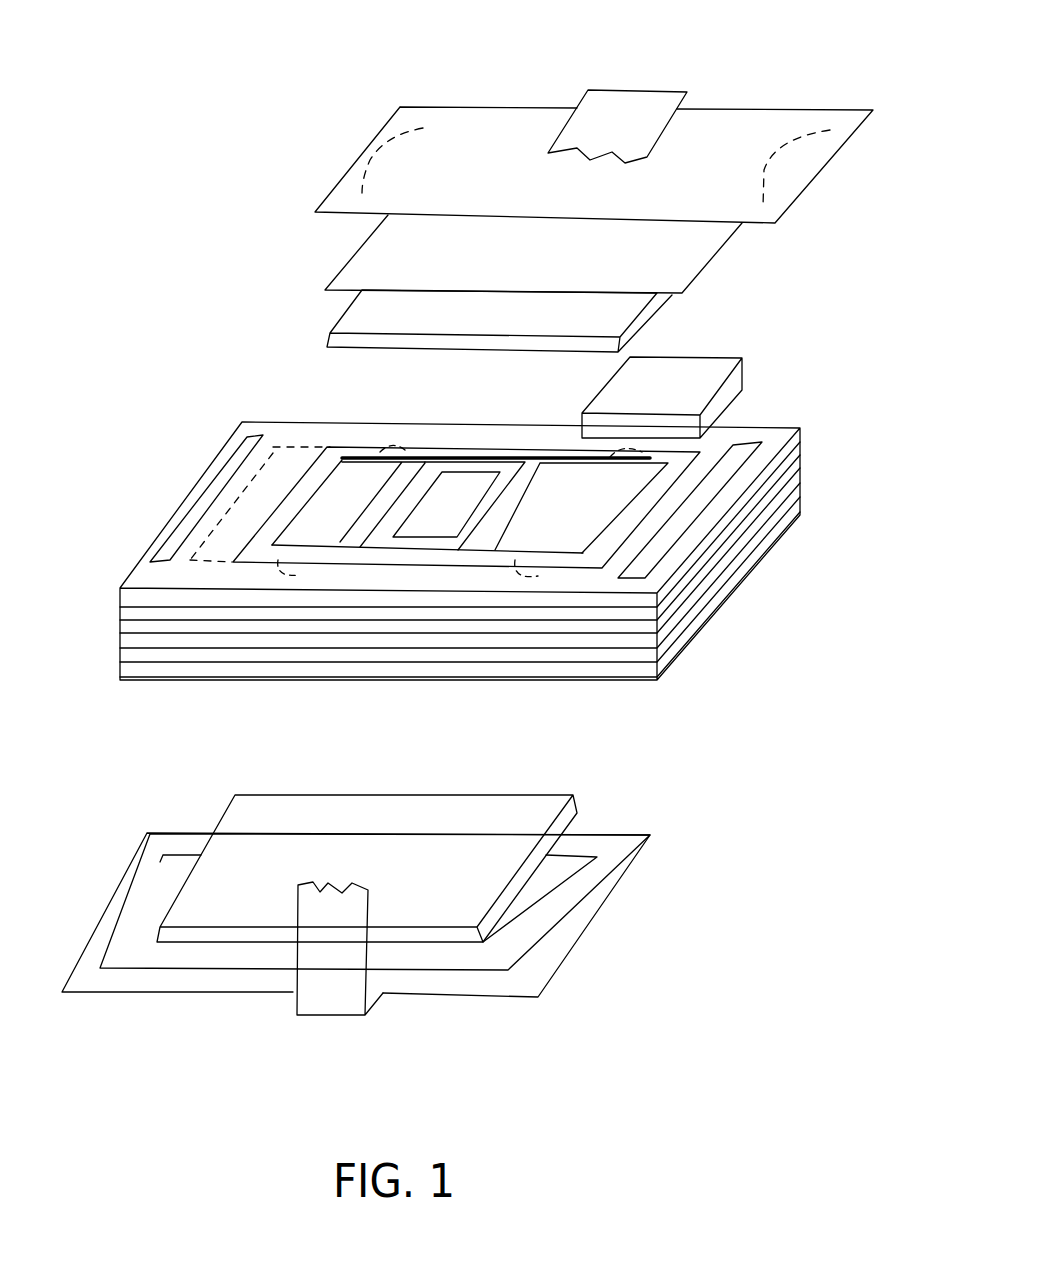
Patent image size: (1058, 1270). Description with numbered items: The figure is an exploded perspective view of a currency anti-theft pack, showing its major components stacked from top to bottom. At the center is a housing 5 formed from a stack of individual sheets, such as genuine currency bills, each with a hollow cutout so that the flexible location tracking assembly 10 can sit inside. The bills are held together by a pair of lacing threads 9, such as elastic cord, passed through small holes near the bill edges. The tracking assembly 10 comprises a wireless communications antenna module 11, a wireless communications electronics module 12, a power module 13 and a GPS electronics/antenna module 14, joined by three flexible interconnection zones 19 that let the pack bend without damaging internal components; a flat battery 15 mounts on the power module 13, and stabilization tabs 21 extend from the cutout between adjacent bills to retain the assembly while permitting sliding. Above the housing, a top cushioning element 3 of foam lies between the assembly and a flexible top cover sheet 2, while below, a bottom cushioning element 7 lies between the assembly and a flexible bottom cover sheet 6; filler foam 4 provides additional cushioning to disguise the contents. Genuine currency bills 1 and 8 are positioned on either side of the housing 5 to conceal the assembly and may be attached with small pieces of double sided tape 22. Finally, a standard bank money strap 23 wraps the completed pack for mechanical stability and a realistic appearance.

The genuine currency bill 1 is at (776, 103).
The top cover sheet 2 is at (705, 260).
The top cushioning element 3 is at (340, 322).
The filler foam 4 is at (688, 357).
The housing 5 is at (803, 468).
The bottom cover sheet 6 is at (577, 885).
The bottom cushioning element 7 is at (575, 803).
The genuine currency bill 8 is at (567, 960).
The lacing threads 9 is at (372, 153).
The location tracking assembly 10 is at (633, 508).
The wireless communications antenna module 11 is at (217, 540).
The wireless communications electronics module 12 is at (313, 530).
The power module 13 is at (382, 540).
The GPS electronics/antenna module 14 is at (597, 517).
The battery 15 is at (448, 520).
The flexible interconnection zones 19 is at (410, 467).
The stabilization tabs 21 is at (540, 570).
The double sided tape 22 is at (213, 483).
The bank money strap 23 is at (636, 87).